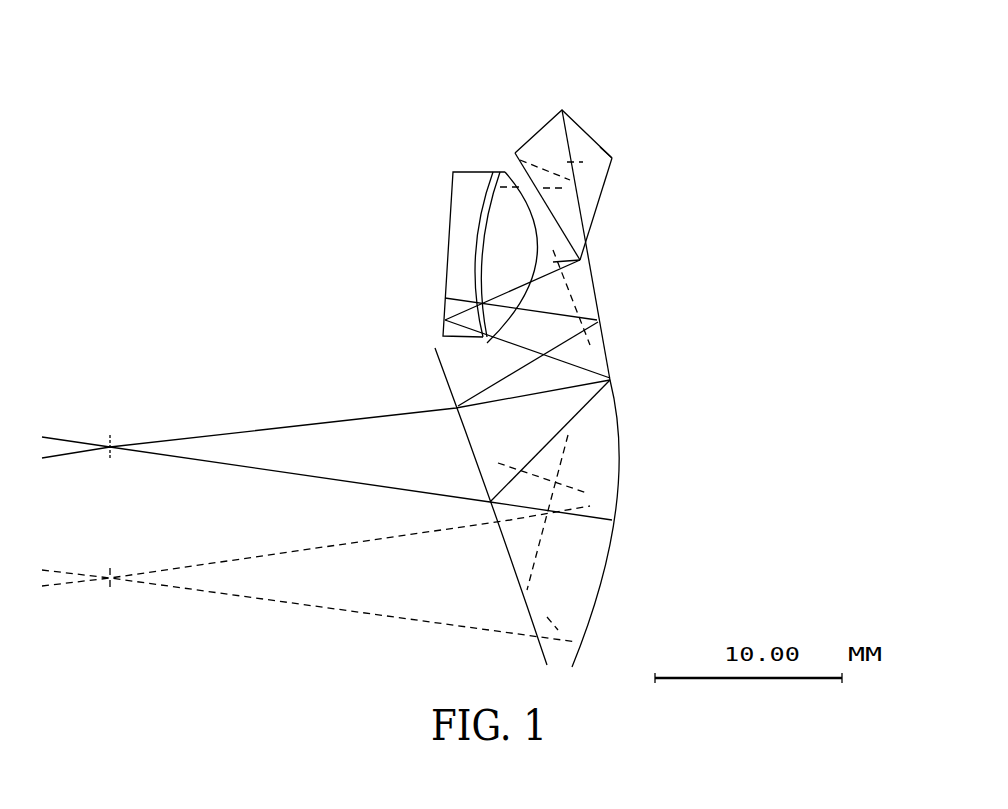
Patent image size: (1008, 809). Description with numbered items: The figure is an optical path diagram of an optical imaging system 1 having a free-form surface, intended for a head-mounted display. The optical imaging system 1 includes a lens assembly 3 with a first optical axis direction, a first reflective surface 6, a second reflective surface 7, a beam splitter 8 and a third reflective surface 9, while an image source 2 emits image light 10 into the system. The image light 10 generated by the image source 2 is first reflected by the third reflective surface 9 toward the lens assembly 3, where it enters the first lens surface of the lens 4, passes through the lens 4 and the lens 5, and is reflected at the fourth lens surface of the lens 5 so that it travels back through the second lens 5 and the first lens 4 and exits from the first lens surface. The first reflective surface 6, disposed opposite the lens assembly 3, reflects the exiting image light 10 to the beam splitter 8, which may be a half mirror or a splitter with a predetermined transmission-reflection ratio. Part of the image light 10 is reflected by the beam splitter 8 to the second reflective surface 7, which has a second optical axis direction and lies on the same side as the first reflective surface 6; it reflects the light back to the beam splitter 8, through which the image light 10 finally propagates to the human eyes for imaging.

The optical imaging system 1 is at (213, 238).
The image source 2 is at (540, 125).
The lens assembly 3 is at (347, 158).
The first lens 4 is at (505, 173).
The second lens 5 is at (455, 280).
The first reflective surface 6 is at (598, 320).
The second reflective surface 7 is at (617, 487).
The beam splitter 8 is at (440, 372).
The third reflective surface 9 is at (598, 202).
The image light 10 is at (577, 125).